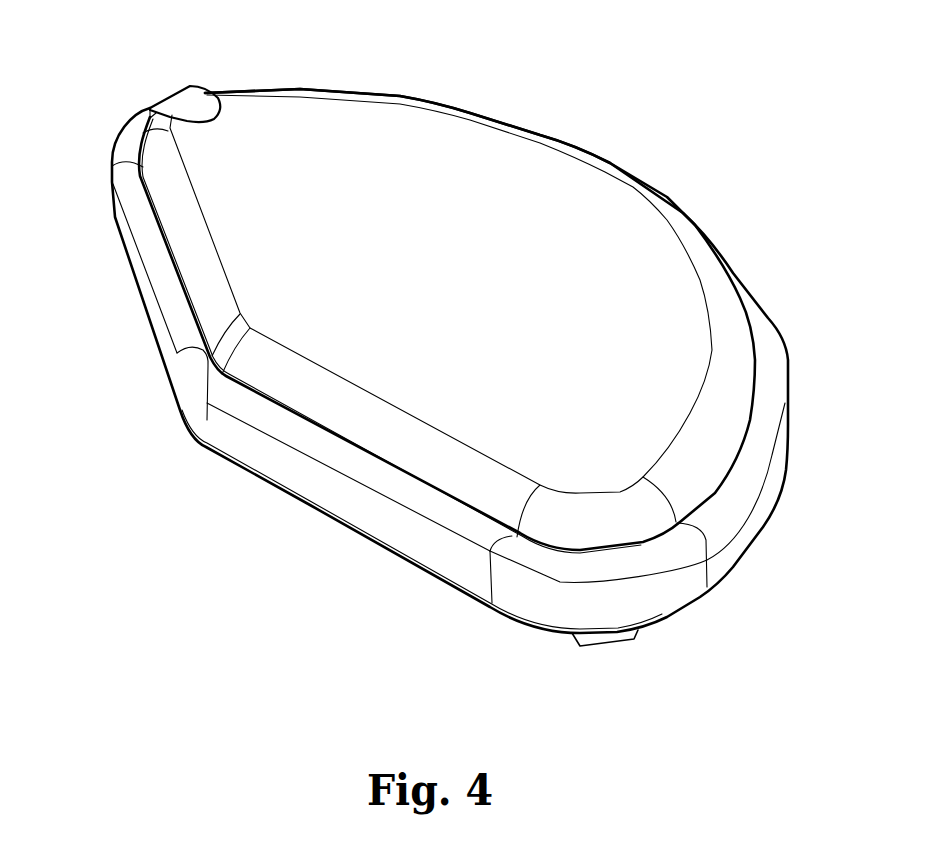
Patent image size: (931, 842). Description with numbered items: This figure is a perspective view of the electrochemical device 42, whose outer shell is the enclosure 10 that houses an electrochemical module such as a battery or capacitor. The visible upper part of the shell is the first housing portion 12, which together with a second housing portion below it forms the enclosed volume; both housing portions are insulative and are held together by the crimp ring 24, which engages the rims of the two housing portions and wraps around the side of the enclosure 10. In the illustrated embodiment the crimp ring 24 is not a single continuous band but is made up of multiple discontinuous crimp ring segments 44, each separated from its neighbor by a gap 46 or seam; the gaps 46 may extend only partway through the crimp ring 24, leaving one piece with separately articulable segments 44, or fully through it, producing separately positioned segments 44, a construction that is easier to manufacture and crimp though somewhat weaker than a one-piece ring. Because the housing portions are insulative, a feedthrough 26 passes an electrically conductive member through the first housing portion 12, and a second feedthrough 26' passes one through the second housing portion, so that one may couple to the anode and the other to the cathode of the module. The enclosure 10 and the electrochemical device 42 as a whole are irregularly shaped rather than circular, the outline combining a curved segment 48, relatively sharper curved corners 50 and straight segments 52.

The enclosure 10 is at (357, 335).
The first housing portion 12 is at (463, 140).
The crimp ring 24 is at (192, 400).
The feedthrough 26 is at (185, 70).
The feedthrough 26' is at (605, 674).
The electrochemical device 42 is at (700, 172).
The crimp ring segments 44 is at (368, 513).
The gap 46 is at (205, 423).
The curved segment 48 is at (340, 93).
The curved corners 50 is at (150, 117).
The straight segments 52 is at (190, 262).